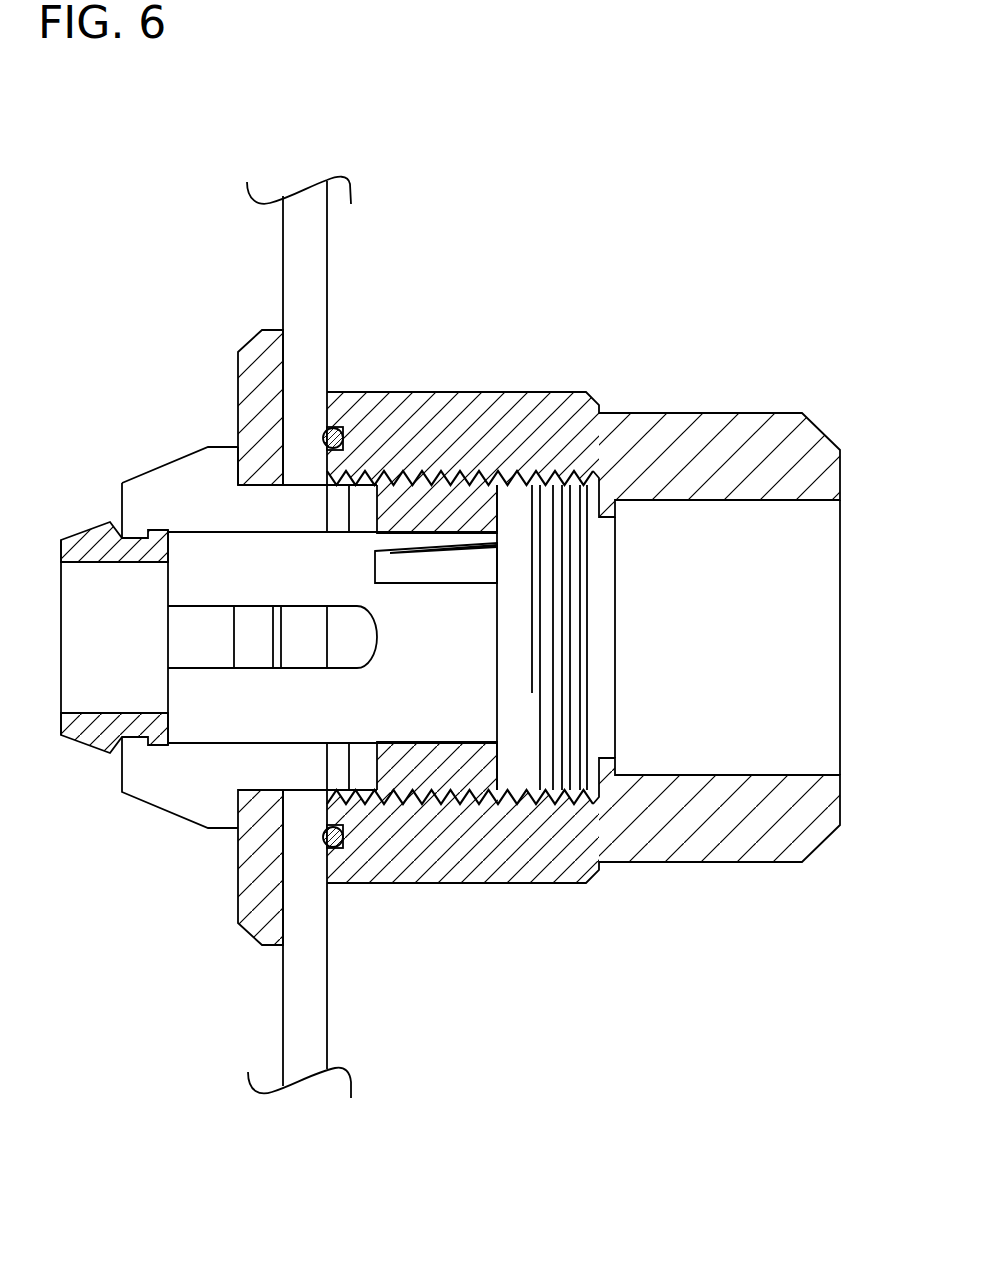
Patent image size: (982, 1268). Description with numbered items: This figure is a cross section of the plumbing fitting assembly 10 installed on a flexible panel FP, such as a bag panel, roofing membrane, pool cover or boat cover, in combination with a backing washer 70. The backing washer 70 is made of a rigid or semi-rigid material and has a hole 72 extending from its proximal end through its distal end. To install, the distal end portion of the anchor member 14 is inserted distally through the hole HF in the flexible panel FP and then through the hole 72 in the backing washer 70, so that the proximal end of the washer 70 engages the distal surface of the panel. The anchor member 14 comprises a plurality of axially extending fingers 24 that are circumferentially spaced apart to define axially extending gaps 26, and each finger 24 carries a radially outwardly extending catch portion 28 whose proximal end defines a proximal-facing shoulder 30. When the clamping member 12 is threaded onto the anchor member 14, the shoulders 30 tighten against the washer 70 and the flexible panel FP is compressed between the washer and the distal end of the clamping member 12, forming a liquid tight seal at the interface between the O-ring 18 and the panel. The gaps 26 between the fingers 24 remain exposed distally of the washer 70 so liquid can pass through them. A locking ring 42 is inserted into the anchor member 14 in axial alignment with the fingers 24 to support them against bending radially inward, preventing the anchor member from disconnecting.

The plumbing fitting assembly 10 is at (592, 992).
The clamping member 12 is at (700, 406).
The anchor member 14 is at (168, 450).
The O-ring 18 is at (338, 432).
The fingers 24 is at (268, 577).
The gaps 26 is at (214, 632).
The catch portion 28 is at (177, 798).
The shoulder 30 is at (240, 462).
The locking ring 42 is at (80, 750).
The backing washer 70 is at (255, 333).
The hole 72 is at (258, 486).
The hole HF is at (297, 795).
The flexible panel FP is at (305, 970).